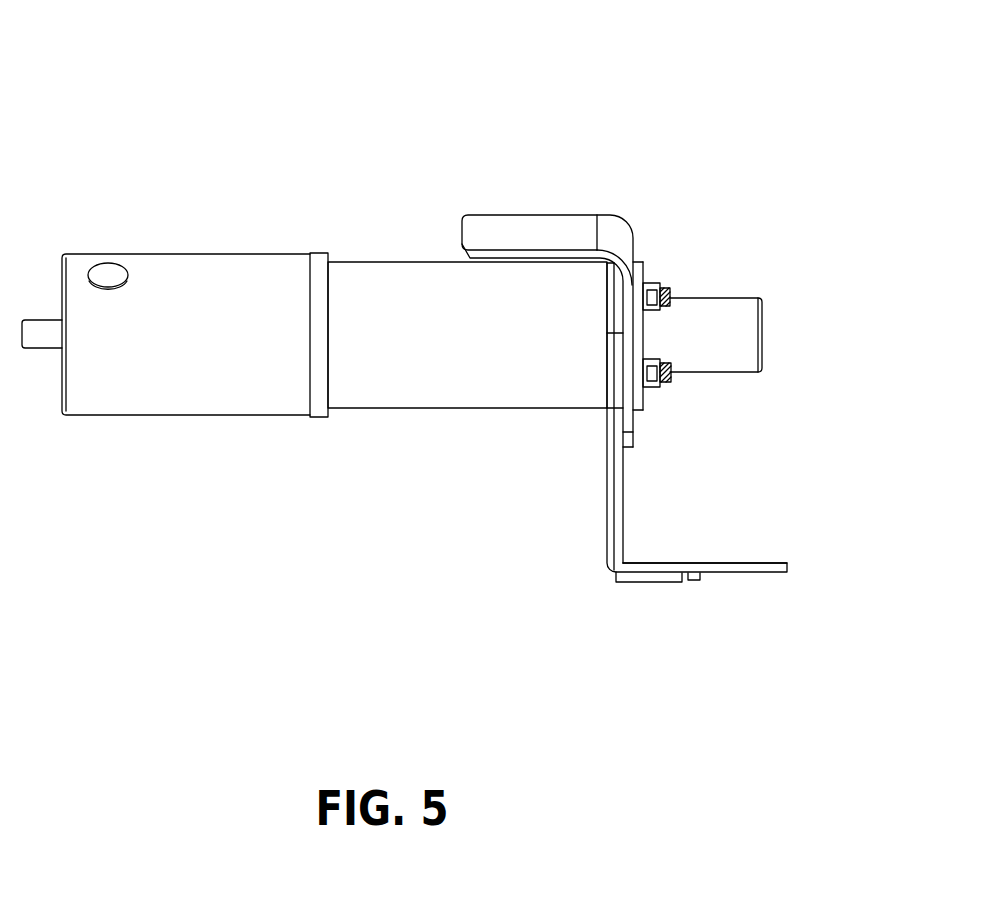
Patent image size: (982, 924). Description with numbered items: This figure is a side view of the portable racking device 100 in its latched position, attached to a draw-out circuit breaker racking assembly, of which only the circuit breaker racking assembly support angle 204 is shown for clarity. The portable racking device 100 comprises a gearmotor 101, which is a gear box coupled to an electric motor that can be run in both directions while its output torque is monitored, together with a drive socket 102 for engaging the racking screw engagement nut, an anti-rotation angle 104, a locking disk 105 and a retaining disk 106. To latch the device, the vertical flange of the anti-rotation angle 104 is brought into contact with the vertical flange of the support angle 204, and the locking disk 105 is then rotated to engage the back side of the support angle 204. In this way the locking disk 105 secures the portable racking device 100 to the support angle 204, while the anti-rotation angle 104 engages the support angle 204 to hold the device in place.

The portable racking device 100 is at (137, 93).
The gearmotor 101 is at (392, 358).
The drive socket 102 is at (710, 323).
The anti-rotation angle 104 is at (608, 522).
The locking disk 105 is at (637, 441).
The retaining disk 106 is at (645, 322).
The circuit breaker racking assembly support angle 204 is at (750, 562).